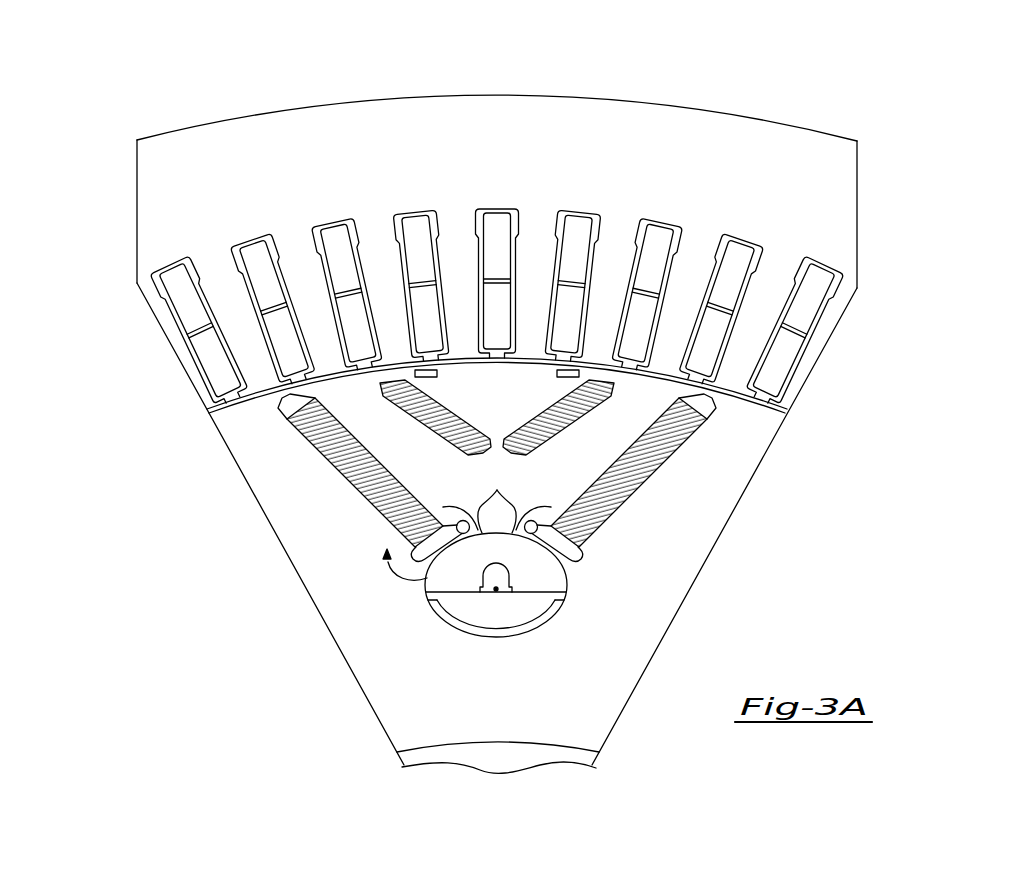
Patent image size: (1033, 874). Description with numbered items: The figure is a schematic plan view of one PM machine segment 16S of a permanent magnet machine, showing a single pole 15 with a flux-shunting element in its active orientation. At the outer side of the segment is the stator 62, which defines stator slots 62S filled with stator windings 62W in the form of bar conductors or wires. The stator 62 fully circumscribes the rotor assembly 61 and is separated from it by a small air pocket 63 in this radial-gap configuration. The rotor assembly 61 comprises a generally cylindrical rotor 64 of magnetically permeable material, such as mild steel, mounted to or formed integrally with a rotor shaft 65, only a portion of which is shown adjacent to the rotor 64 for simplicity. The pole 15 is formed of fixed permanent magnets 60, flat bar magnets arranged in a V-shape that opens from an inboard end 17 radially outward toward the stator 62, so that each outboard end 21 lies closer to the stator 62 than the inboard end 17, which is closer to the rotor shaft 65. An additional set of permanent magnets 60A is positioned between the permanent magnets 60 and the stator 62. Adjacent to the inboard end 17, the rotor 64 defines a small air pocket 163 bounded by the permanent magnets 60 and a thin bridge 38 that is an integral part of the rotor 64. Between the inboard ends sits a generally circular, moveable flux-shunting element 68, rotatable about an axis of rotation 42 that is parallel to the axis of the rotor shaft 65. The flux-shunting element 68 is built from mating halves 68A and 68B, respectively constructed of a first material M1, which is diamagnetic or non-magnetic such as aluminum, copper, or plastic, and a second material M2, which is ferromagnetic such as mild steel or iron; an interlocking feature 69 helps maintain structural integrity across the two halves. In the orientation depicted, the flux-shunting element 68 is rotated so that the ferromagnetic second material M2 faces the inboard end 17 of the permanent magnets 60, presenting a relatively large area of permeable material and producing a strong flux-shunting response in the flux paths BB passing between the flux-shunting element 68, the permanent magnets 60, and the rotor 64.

The PM machine segment 16S is at (792, 86).
The stator 62 is at (158, 187).
The stator windings 62W is at (625, 197).
The stator slots 62S is at (178, 280).
The air pocket 63 is at (225, 408).
The pole 15 is at (734, 481).
The rotor assembly 61 is at (762, 492).
The rotor shaft 65 is at (580, 752).
The permanent magnets 60 is at (340, 458).
The additional permanent magnets 60A is at (432, 420).
The outboard end 21 is at (283, 416).
The inboard end 17 is at (420, 553).
The rotor 64 is at (330, 565).
The flux-shunting element 68 is at (390, 597).
The air pocket 163 is at (433, 563).
The bridge 38 is at (434, 558).
The flux paths BB is at (497, 489).
The interlocking feature 69 is at (480, 634).
The mating half 68B is at (481, 628).
The first material M1 is at (500, 628).
The second material M2 is at (553, 588).
The axis of rotation 42 is at (498, 592).
The mating half 68A is at (568, 592).